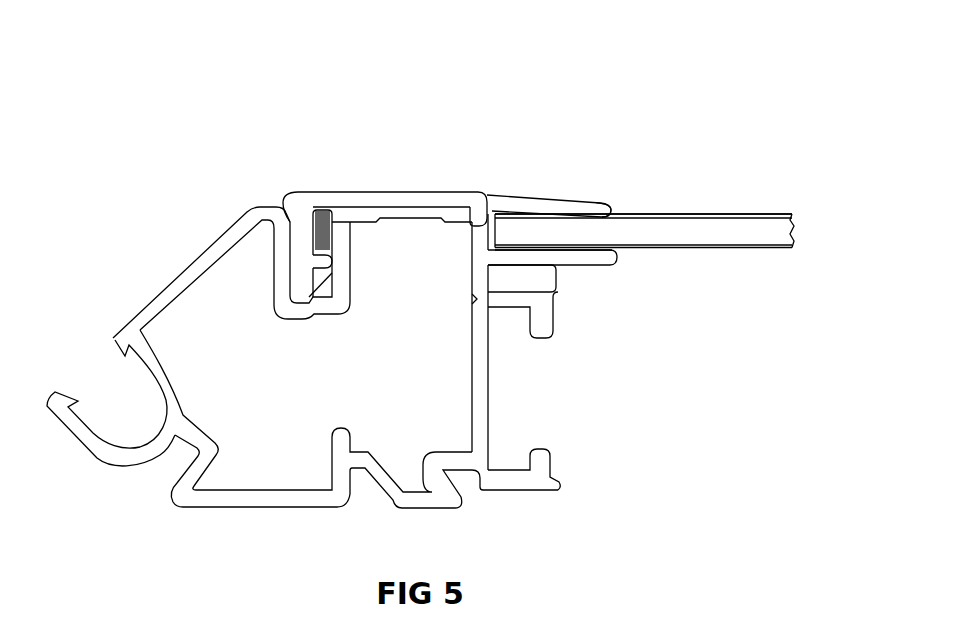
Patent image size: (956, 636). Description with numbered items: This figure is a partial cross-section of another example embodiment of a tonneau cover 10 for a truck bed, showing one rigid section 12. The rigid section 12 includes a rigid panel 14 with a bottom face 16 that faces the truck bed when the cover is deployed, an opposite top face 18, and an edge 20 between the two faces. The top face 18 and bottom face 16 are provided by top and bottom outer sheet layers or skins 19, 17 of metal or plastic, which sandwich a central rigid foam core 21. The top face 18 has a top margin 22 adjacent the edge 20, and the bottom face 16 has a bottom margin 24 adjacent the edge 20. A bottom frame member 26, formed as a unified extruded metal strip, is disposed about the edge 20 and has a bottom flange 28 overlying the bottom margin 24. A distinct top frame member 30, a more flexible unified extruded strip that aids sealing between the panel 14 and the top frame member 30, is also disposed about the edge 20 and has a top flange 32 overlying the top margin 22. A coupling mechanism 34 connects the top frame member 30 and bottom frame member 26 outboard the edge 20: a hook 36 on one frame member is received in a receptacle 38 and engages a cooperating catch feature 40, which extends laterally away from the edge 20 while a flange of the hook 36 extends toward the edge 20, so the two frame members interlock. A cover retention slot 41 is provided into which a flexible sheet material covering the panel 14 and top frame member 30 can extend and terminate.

The tonneau cover 10 is at (185, 73).
The rigid section 12 is at (664, 176).
The rigid panel 14 is at (695, 263).
The bottom face 16 is at (664, 237).
The bottom outer sheet layer 17 is at (793, 248).
The top face 18 is at (716, 213).
The top outer sheet layer 19 is at (793, 215).
The edge 20 is at (476, 196).
The central rigid foam core 21 is at (800, 230).
The top margin 22 is at (538, 207).
The bottom margin 24 is at (584, 252).
The bottom frame member 26 is at (170, 266).
The bottom flange 28 is at (557, 257).
The top frame member 30 is at (379, 177).
The top flange 32 is at (581, 202).
The coupling mechanism 34 is at (276, 179).
The hook 36 is at (325, 285).
The receptacle 38 is at (322, 234).
The catch feature 40 is at (326, 263).
The cover retention slot 41 is at (100, 374).